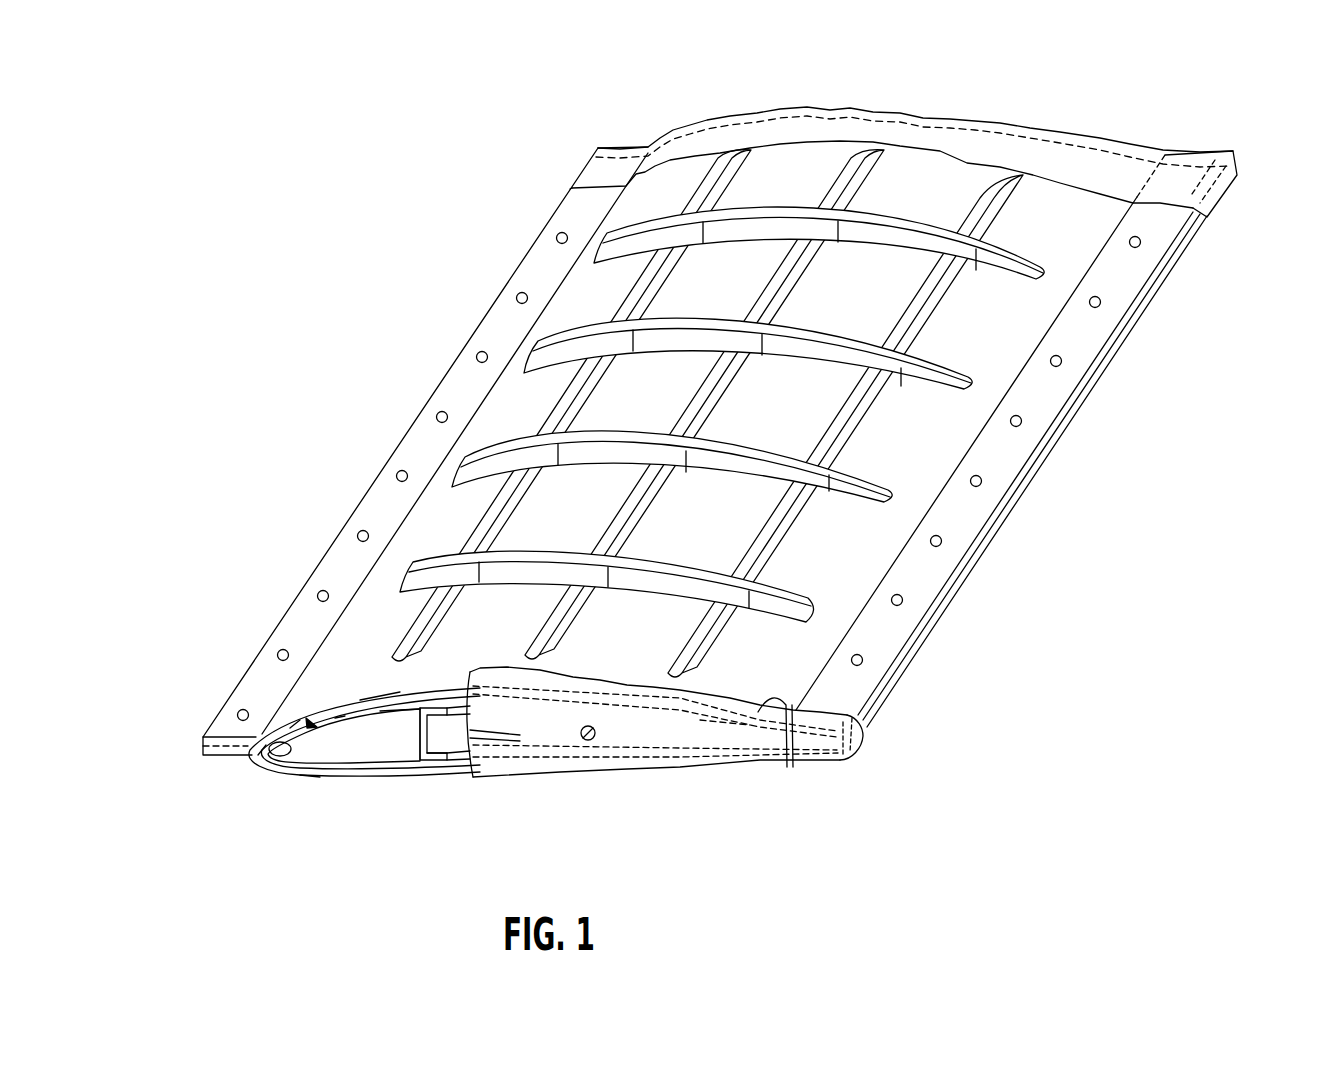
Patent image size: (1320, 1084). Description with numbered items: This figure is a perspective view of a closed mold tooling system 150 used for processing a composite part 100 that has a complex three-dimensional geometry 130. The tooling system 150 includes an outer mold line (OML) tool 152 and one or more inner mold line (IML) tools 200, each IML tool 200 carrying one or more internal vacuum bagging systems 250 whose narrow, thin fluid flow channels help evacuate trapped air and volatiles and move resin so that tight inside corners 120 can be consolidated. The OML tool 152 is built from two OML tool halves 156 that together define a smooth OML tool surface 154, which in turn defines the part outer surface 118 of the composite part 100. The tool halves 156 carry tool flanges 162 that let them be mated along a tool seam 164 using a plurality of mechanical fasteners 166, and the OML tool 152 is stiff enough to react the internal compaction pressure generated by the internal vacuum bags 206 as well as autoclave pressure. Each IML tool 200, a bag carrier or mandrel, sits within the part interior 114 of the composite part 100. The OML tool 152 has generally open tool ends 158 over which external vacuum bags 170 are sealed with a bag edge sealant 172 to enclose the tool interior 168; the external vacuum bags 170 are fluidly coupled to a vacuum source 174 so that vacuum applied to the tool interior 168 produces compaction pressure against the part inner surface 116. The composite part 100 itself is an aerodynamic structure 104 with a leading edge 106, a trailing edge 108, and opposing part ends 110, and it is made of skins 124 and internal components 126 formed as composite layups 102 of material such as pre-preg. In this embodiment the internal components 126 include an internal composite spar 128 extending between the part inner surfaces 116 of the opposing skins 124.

The composite part 100 is at (367, 766).
The composite layup 102 is at (380, 723).
The aerodynamic structure 104 is at (338, 735).
The leading edge 106 is at (272, 742).
The trailing edge 108 is at (725, 737).
The part ends 110 is at (431, 768).
The part interior 114 is at (292, 724).
The part inner surface 116 is at (320, 752).
The part outer surface 118 is at (310, 724).
The inside corners 120 is at (292, 756).
The skins 124 is at (312, 722).
The internal components 126 is at (473, 740).
The internal composite spar 128 is at (565, 752).
The three-dimensional geometry 130 is at (478, 738).
The closed mold tooling system 150 is at (440, 380).
The outer mold line (OML) tool 152 is at (522, 372).
The OML tool surface 154 is at (387, 697).
The OML tool halves 156 is at (995, 493).
The tool ends 158 is at (1200, 150).
The tool flanges 162 is at (1000, 522).
The tool seam 164 is at (1050, 440).
The mechanical fasteners 166 is at (557, 237).
The tool interior 168 is at (258, 716).
The external vacuum bags 170 is at (1007, 142).
The bag edge sealant 172 is at (1162, 199).
The vacuum source 174 is at (612, 748).
The inner mold line (IML) tool 200 is at (305, 770).
The internal vacuum bags 206 is at (388, 722).
The internal vacuum bagging system 250 is at (338, 737).